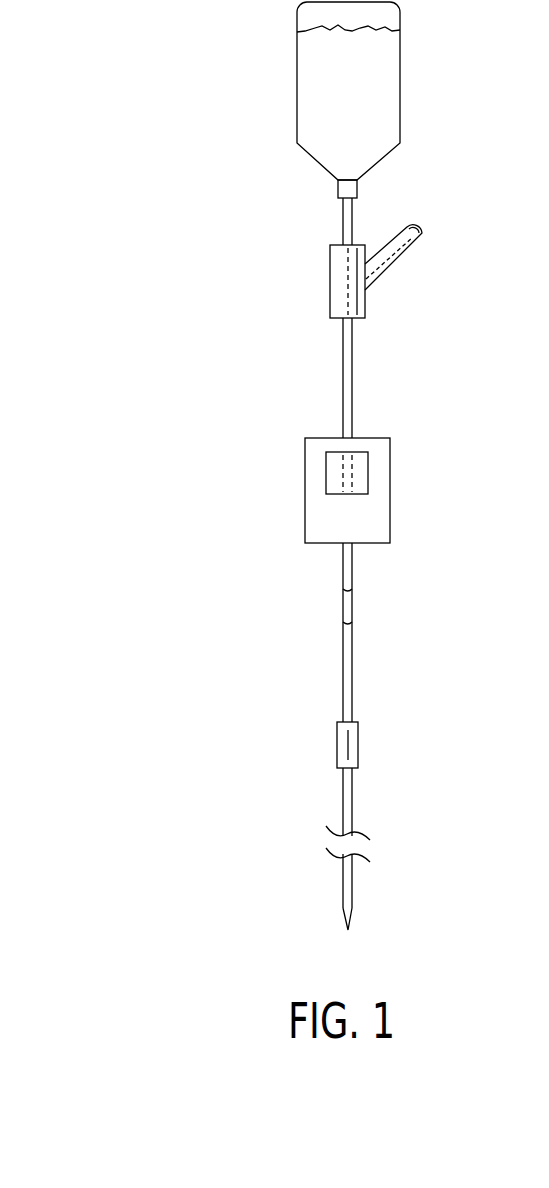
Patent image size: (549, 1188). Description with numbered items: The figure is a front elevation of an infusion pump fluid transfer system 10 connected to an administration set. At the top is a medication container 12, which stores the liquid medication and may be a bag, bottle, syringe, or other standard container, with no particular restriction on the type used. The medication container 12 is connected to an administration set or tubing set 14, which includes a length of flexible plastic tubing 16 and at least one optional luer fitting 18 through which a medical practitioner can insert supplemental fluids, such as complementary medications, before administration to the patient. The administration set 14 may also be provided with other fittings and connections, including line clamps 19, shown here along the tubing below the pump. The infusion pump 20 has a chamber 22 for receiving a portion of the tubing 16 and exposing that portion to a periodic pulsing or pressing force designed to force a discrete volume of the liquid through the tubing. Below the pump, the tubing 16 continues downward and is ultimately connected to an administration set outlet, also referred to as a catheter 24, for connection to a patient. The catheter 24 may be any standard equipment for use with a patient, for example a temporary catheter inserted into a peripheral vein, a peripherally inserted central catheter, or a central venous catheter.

The infusion pump fluid transfer system 10 is at (133, 129).
The medication container 12 is at (297, 70).
The administration set 14 is at (384, 313).
The flexible plastic tubing 16 is at (353, 373).
The luer fitting 18 is at (330, 278).
The line clamp 19 is at (352, 745).
The infusion pump 20 is at (305, 487).
The chamber 22 is at (352, 474).
The catheter 24 is at (352, 913).